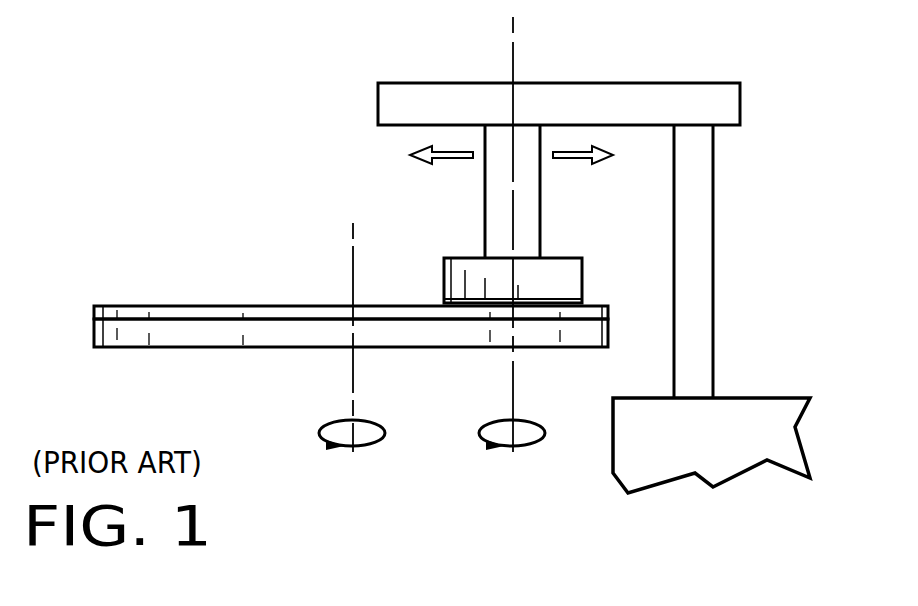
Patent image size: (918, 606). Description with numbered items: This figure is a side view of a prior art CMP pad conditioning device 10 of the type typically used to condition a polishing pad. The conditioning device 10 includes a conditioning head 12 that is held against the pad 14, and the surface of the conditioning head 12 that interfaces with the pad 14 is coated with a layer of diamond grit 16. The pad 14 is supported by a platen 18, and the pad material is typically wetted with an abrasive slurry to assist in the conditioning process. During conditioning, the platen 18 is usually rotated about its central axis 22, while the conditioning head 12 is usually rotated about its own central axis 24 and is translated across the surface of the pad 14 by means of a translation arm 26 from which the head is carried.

The conditioning device 10 is at (218, 162).
The conditioning head 12 is at (574, 262).
The pad 14 is at (136, 312).
The layer of diamond grit 16 is at (580, 296).
The platen 18 is at (136, 343).
The central axis 22 is at (350, 230).
The central axis 24 is at (511, 22).
The translation arm 26 is at (607, 90).